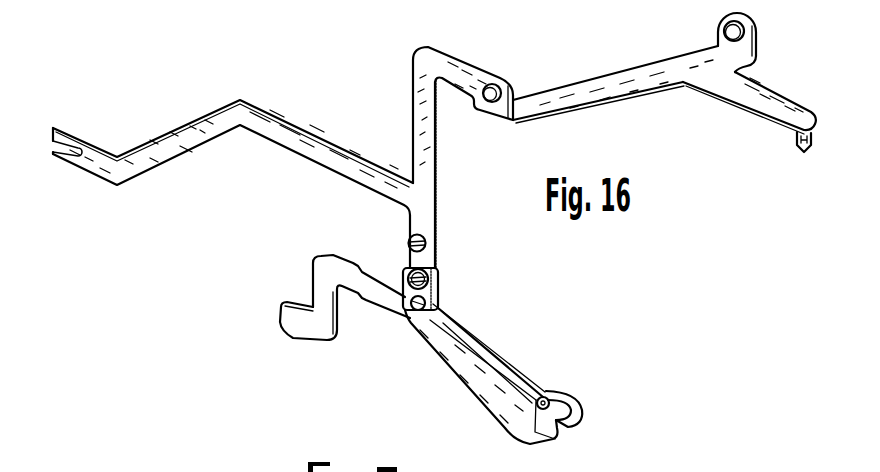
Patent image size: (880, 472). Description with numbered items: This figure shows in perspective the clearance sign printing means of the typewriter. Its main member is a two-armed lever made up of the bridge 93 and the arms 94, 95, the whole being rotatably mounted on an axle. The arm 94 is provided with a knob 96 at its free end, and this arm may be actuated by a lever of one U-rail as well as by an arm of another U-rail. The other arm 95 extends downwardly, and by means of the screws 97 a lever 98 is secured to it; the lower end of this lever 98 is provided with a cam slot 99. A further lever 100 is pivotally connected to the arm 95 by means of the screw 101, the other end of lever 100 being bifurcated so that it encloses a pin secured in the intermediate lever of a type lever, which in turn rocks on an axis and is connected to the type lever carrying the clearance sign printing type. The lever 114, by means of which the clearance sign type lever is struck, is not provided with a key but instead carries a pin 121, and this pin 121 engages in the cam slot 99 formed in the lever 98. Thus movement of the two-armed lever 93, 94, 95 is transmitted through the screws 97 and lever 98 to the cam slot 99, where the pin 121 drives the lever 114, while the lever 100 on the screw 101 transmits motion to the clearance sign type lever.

The bridge 93 is at (613, 92).
The arm 94 is at (760, 108).
The arm 95 is at (417, 108).
The knob 96 is at (804, 147).
The screws 97 is at (440, 276).
The lever 98 is at (478, 387).
The cam slot 99 is at (578, 405).
The lever 100 is at (312, 153).
The screw 101 is at (431, 236).
The lever 114 is at (310, 333).
The pin 121 is at (547, 394).